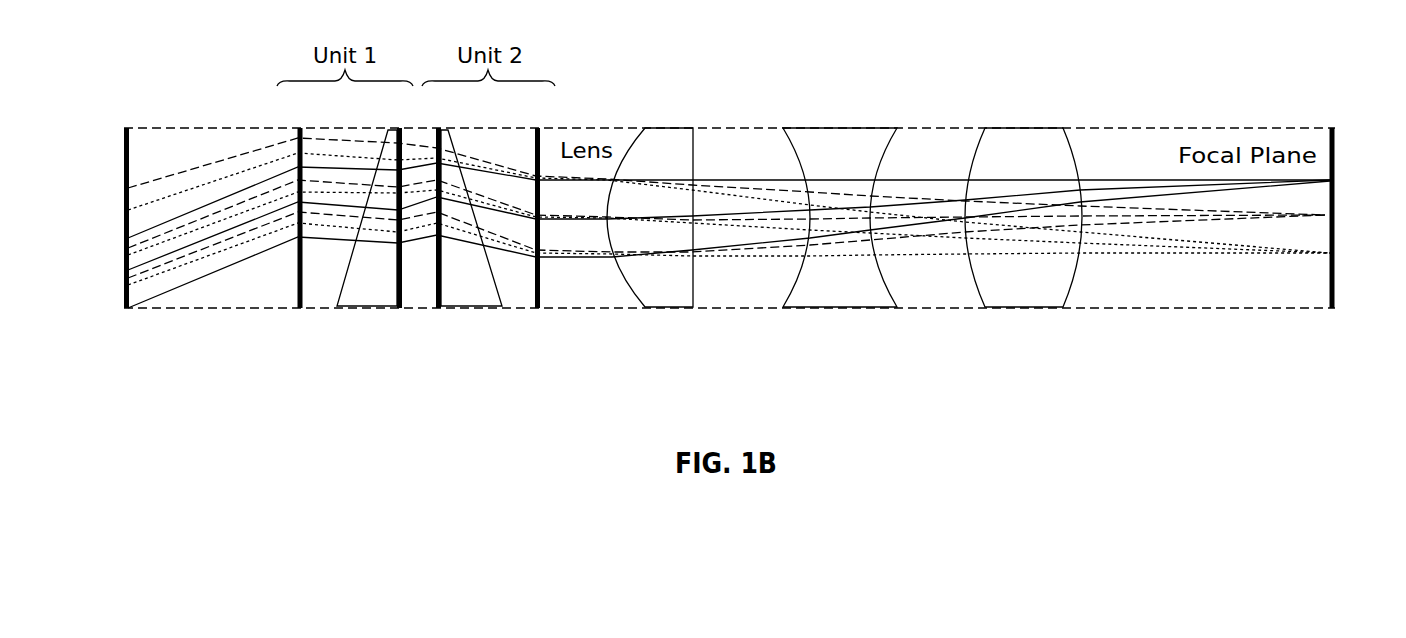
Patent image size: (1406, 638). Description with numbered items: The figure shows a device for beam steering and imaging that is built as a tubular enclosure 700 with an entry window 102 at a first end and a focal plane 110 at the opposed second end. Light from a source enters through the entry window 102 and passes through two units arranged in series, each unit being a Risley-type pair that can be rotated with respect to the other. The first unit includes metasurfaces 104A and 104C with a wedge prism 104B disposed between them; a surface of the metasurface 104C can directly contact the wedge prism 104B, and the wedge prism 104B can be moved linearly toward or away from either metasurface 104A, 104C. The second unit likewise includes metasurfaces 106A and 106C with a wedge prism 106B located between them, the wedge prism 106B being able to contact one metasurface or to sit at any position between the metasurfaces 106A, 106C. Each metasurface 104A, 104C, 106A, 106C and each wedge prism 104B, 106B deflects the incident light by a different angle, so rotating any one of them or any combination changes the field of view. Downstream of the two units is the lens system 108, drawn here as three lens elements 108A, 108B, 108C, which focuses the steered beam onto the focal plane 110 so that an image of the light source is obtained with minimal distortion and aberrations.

The entry window 102 is at (125, 260).
The metasurface 104A is at (298, 290).
The wedge prism 104B is at (380, 298).
The metasurface 104C is at (403, 292).
The metasurface 106A is at (540, 292).
The wedge prism 106B is at (480, 297).
The metasurface 106C is at (430, 130).
The lens system 108 is at (844, 240).
The first lens element 108A is at (673, 137).
The second lens element 108B is at (808, 137).
The third lens element 108C is at (1016, 138).
The focal plane 110 is at (1335, 273).
The tubular enclosure 700 is at (1075, 128).